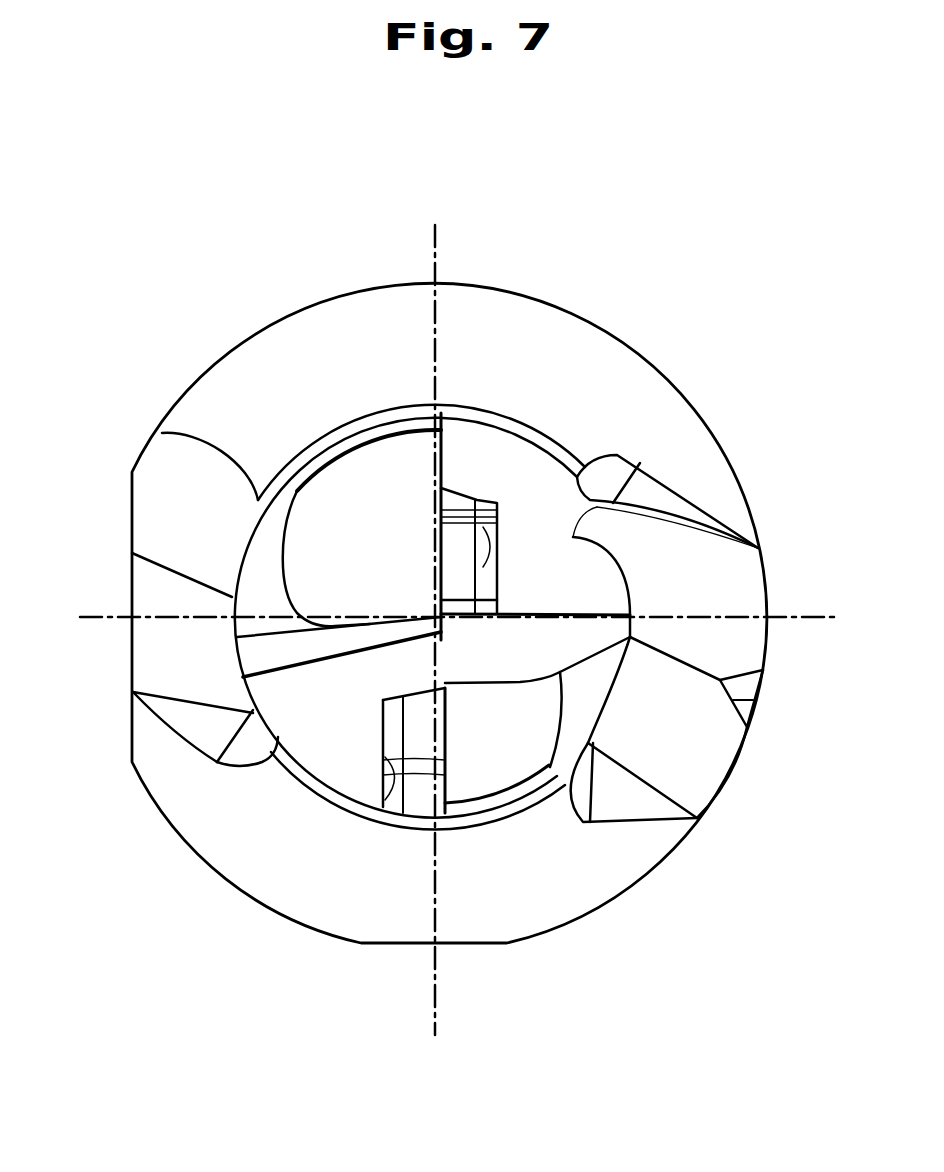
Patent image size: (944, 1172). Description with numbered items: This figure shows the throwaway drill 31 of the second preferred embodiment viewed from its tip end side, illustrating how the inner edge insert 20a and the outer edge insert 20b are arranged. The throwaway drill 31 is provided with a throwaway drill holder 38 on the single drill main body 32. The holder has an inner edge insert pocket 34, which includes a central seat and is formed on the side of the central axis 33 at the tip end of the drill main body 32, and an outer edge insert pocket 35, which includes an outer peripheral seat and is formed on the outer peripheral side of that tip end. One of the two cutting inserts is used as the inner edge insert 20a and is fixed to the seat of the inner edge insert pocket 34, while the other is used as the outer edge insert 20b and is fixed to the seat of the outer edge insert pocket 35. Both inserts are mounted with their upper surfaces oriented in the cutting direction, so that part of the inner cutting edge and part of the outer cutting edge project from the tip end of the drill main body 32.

The throwaway drill 31 is at (726, 334).
The drill main body 32 is at (760, 548).
The central axis 33 is at (432, 652).
The inner edge insert pocket 34 is at (495, 507).
The outer edge insert pocket 35 is at (367, 817).
The throwaway drill holder 38 is at (693, 462).
The inner edge insert 20a is at (461, 540).
The outer edge insert 20b is at (417, 793).